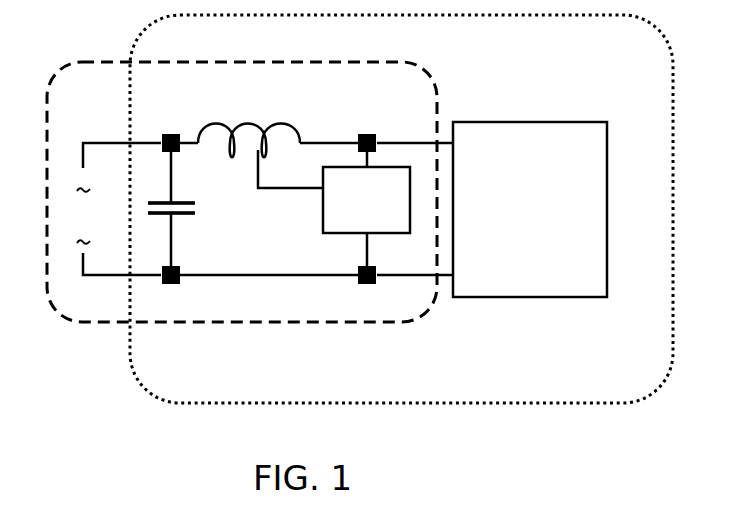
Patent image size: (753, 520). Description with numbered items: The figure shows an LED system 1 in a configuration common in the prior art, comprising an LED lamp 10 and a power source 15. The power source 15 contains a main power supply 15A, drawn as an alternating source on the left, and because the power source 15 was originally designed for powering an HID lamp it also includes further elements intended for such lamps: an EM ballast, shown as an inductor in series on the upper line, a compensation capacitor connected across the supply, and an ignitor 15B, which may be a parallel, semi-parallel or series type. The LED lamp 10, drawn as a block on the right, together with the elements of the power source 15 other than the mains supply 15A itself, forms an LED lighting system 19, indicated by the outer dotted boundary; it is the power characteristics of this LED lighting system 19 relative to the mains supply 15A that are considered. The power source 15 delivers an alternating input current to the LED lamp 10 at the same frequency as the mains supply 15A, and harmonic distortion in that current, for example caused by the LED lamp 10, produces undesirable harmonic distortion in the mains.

The LED system 1 is at (375, 225).
The LED lamp 10 is at (530, 209).
The power source 15 is at (242, 322).
The main power supply 15A is at (112, 209).
The ignitor 15B is at (366, 209).
The LED lighting system 19 is at (673, 210).